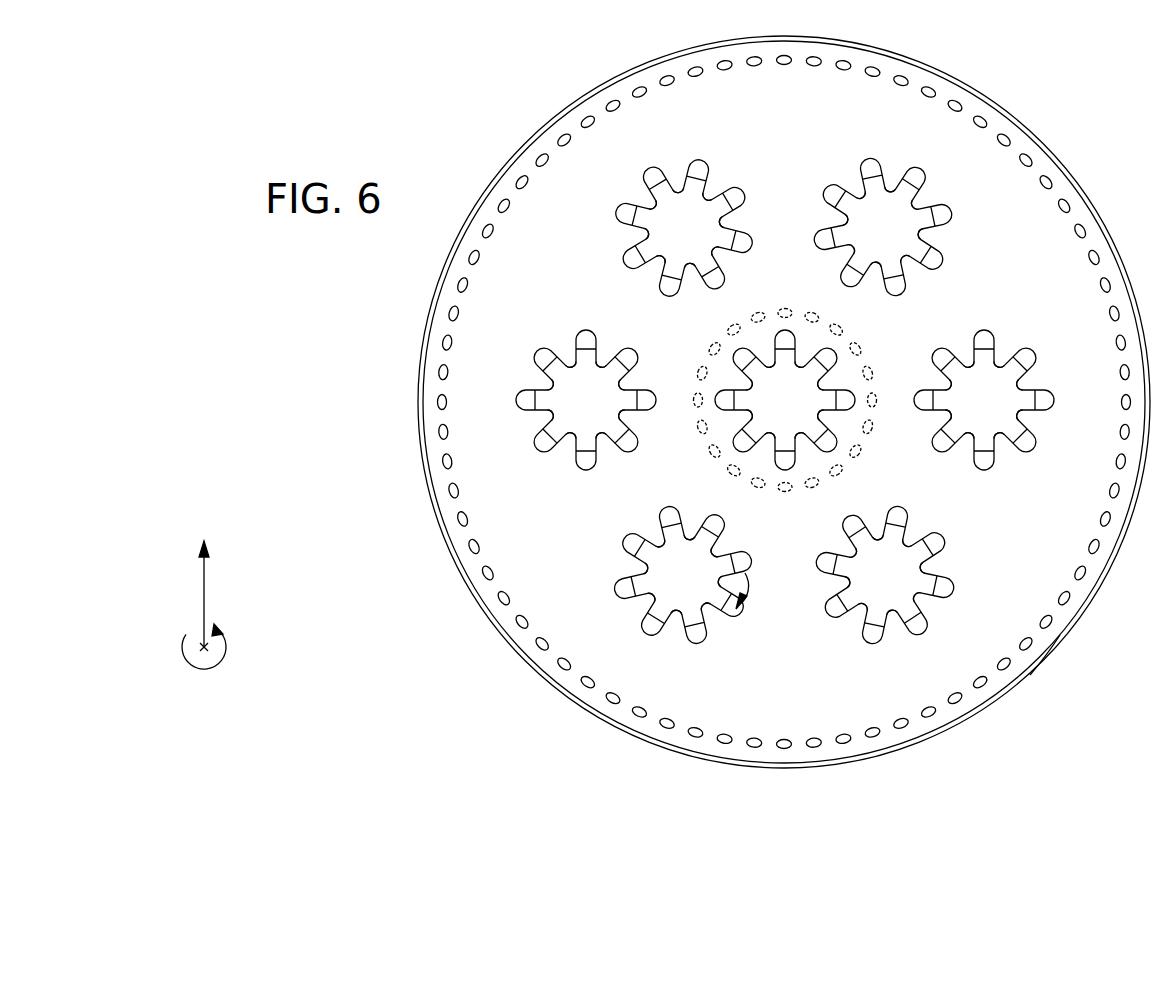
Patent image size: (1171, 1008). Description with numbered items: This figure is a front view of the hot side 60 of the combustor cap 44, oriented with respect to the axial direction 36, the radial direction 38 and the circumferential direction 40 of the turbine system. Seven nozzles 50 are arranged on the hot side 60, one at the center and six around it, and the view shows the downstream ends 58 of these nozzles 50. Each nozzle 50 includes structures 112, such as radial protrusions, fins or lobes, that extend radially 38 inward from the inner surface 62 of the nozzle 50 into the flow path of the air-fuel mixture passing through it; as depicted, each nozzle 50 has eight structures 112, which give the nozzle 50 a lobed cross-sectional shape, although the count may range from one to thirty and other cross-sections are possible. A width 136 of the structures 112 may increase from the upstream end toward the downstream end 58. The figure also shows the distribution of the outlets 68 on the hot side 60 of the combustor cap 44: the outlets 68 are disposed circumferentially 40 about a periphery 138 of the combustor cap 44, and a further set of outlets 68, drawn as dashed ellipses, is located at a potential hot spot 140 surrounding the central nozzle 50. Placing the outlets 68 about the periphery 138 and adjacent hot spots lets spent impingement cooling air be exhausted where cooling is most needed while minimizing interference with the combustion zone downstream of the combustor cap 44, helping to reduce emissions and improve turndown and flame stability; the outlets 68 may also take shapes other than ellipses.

The axial axis or direction 36 is at (198, 643).
The radial axis or direction 38 is at (204, 598).
The circumferential axis or direction 40 is at (221, 661).
The combustor cap 44 is at (1045, 140).
The nozzle 50 is at (785, 393).
The downstream end 58 is at (679, 192).
The hot side 60 is at (1064, 174).
The inner surface 62 is at (658, 184).
The outlets 68 is at (545, 165).
The structures 112 is at (914, 206).
The width 136 is at (690, 634).
The periphery 138 is at (1046, 660).
The potential hot spot 140 is at (770, 490).